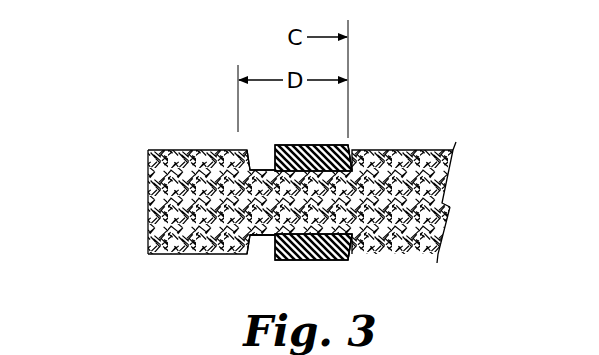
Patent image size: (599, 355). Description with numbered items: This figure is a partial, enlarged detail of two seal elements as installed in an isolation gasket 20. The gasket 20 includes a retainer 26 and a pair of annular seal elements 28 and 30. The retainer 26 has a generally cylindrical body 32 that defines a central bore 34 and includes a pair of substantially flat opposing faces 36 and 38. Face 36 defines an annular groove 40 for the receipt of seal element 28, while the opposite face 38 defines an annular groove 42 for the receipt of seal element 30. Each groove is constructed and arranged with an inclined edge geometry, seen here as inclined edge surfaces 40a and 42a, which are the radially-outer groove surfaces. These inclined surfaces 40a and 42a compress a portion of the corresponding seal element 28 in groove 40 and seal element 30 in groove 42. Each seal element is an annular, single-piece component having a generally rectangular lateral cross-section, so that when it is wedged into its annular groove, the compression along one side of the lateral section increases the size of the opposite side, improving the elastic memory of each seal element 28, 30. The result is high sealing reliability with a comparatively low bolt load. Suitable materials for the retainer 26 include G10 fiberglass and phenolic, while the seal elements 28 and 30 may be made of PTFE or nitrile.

The gasket 20 is at (116, 131).
The retainer 26 is at (388, 150).
The seal element 28 is at (296, 145).
The seal element 30 is at (299, 260).
The cylindrical body 32 is at (183, 207).
The central bore 34 is at (118, 210).
The face 36 is at (427, 150).
The face 38 is at (421, 255).
The annular groove 40 is at (258, 153).
The inclined edge surface 40a is at (360, 152).
The annular groove 42 is at (262, 249).
The inclined edge surface 42a is at (361, 256).